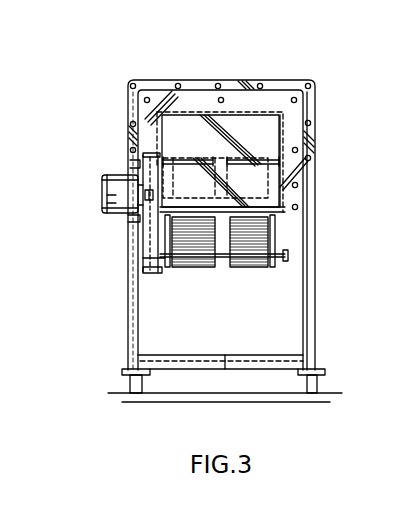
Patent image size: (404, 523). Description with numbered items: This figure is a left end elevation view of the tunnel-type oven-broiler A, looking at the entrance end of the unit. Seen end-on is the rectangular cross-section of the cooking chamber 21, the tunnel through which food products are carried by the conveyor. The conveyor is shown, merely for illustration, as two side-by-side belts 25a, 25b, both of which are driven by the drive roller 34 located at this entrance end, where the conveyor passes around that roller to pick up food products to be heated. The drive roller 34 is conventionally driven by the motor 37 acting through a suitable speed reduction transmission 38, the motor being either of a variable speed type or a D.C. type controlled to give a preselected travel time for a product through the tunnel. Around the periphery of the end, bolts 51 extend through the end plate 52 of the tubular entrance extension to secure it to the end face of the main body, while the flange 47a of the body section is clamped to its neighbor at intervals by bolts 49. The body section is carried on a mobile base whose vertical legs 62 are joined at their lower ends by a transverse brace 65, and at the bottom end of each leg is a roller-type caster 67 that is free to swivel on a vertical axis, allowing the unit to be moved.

The bolts 49 is at (218, 80).
The flange 47a is at (275, 80).
The oven-broiler A is at (330, 82).
The bolts 51 is at (144, 101).
The end plate 52 is at (297, 112).
The cooking chamber 21 is at (322, 132).
The motor 37 is at (100, 216).
The speed reduction transmission 38 is at (142, 277).
The belt 25a is at (185, 270).
The drive roller 34 is at (222, 270).
The belt 25b is at (253, 270).
The transverse brace 65 is at (263, 355).
The vertical leg 62 is at (318, 330).
The roller-type caster 67 is at (123, 388).